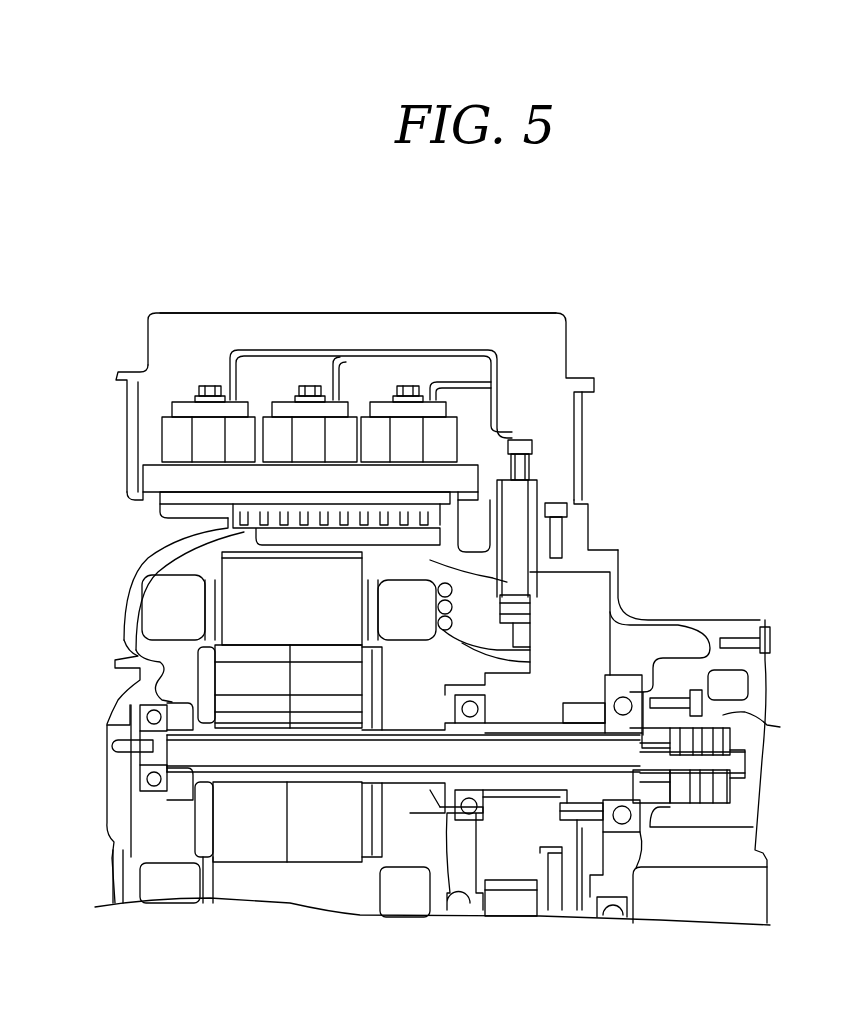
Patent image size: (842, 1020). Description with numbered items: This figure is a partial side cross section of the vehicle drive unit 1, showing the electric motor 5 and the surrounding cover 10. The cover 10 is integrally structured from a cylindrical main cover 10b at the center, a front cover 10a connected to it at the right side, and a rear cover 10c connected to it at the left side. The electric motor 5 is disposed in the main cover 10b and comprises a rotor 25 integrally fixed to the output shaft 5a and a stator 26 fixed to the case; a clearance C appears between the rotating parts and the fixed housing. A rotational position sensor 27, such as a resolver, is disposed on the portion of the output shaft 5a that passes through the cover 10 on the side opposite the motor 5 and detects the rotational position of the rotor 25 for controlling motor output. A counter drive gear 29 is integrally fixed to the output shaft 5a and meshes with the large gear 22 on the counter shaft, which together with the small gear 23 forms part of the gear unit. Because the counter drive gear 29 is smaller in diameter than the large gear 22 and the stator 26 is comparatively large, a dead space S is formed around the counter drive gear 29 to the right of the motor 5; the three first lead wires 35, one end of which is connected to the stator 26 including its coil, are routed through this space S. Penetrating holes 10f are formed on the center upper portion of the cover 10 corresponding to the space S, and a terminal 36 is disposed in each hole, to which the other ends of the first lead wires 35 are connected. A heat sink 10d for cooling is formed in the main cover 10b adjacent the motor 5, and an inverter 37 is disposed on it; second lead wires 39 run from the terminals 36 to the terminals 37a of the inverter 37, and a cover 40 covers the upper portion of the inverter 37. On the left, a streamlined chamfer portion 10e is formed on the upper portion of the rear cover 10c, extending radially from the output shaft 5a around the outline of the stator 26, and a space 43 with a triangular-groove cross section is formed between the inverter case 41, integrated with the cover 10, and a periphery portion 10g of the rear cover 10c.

The electric vehicle drive unit 1 is at (816, 512).
The electric motor 5 is at (172, 678).
The output shaft 5a is at (447, 738).
The cover 10 is at (622, 547).
The front cover 10a is at (680, 620).
The main cover 10b is at (590, 512).
The rear cover 10c is at (122, 664).
The heat sink 10d is at (399, 490).
The streamlined chamfer portion 10e is at (152, 549).
The penetrating holes 10f is at (525, 605).
The periphery portion 10g is at (124, 568).
The large gear 22 is at (562, 824).
The small gear 23 is at (530, 903).
The rotor 25 is at (172, 650).
The stator 26 is at (146, 602).
The rotational position sensor 27 is at (780, 727).
The counter drive gear 29 is at (580, 705).
The first lead wires 35 is at (457, 645).
The terminal 36 is at (522, 490).
The inverter 37 is at (330, 328).
The terminals of the inverter 37a is at (208, 386).
The second lead wires 39 is at (480, 345).
The cover 40 is at (562, 316).
The inverter case 41 is at (128, 496).
The space 43 is at (180, 528).
The clearance C is at (140, 784).
The space S is at (568, 604).